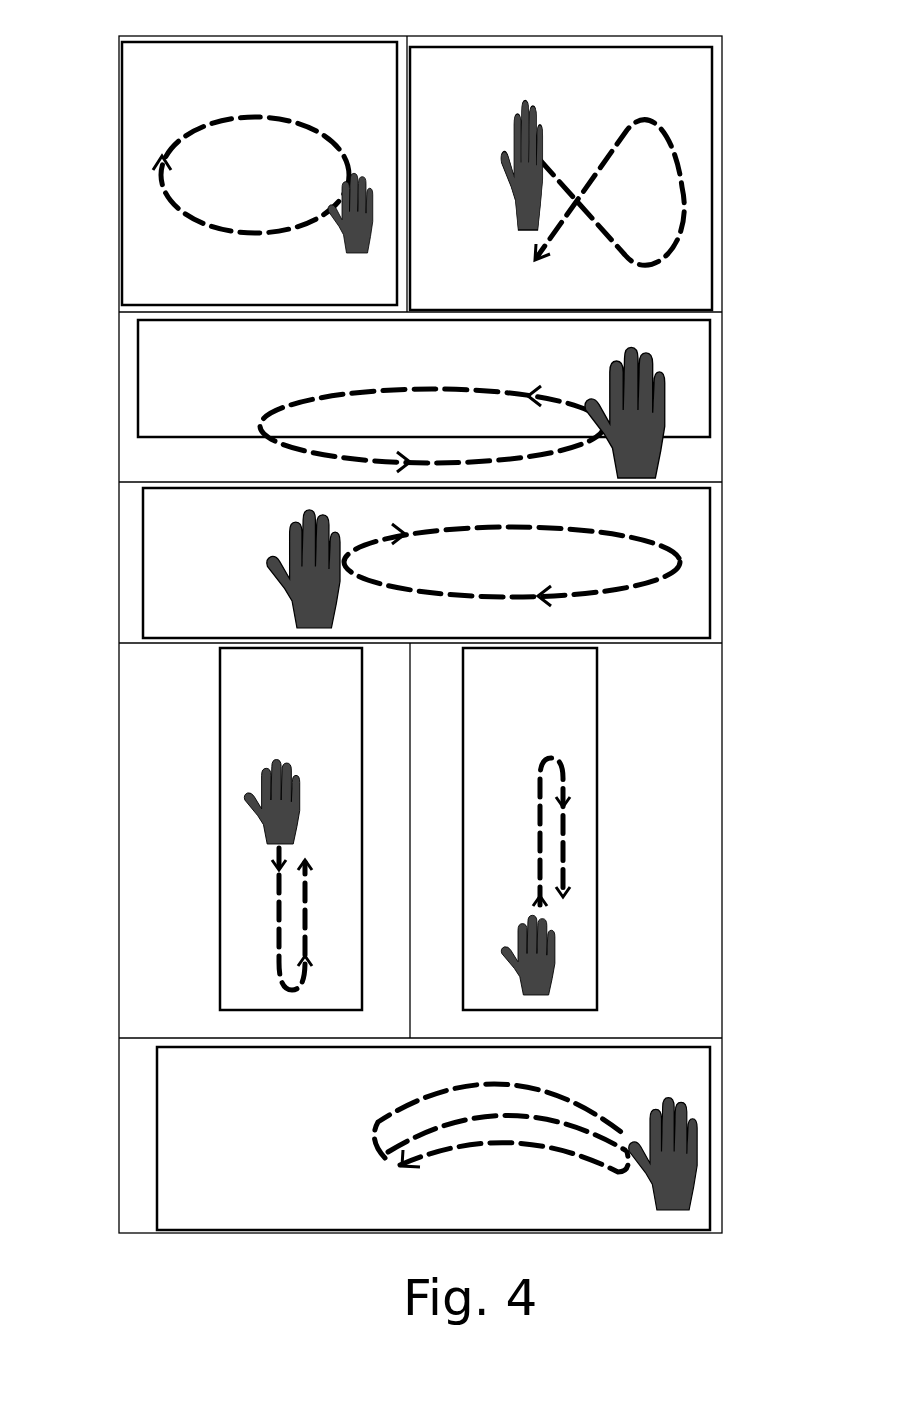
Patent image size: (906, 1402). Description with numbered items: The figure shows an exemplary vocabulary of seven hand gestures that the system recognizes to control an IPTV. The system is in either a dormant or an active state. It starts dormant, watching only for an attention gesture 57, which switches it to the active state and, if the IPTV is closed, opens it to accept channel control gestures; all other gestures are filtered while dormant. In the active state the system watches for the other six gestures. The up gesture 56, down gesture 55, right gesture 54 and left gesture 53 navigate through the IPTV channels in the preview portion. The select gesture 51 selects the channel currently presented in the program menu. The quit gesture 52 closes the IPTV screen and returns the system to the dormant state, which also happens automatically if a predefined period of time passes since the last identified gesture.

The select gesture 51 is at (142, 67).
The quit gesture 52 is at (698, 68).
The left gesture 53 is at (703, 340).
The right gesture 54 is at (700, 555).
The down gesture 55 is at (228, 712).
The up gesture 56 is at (578, 693).
The attention gesture 57 is at (682, 1078).